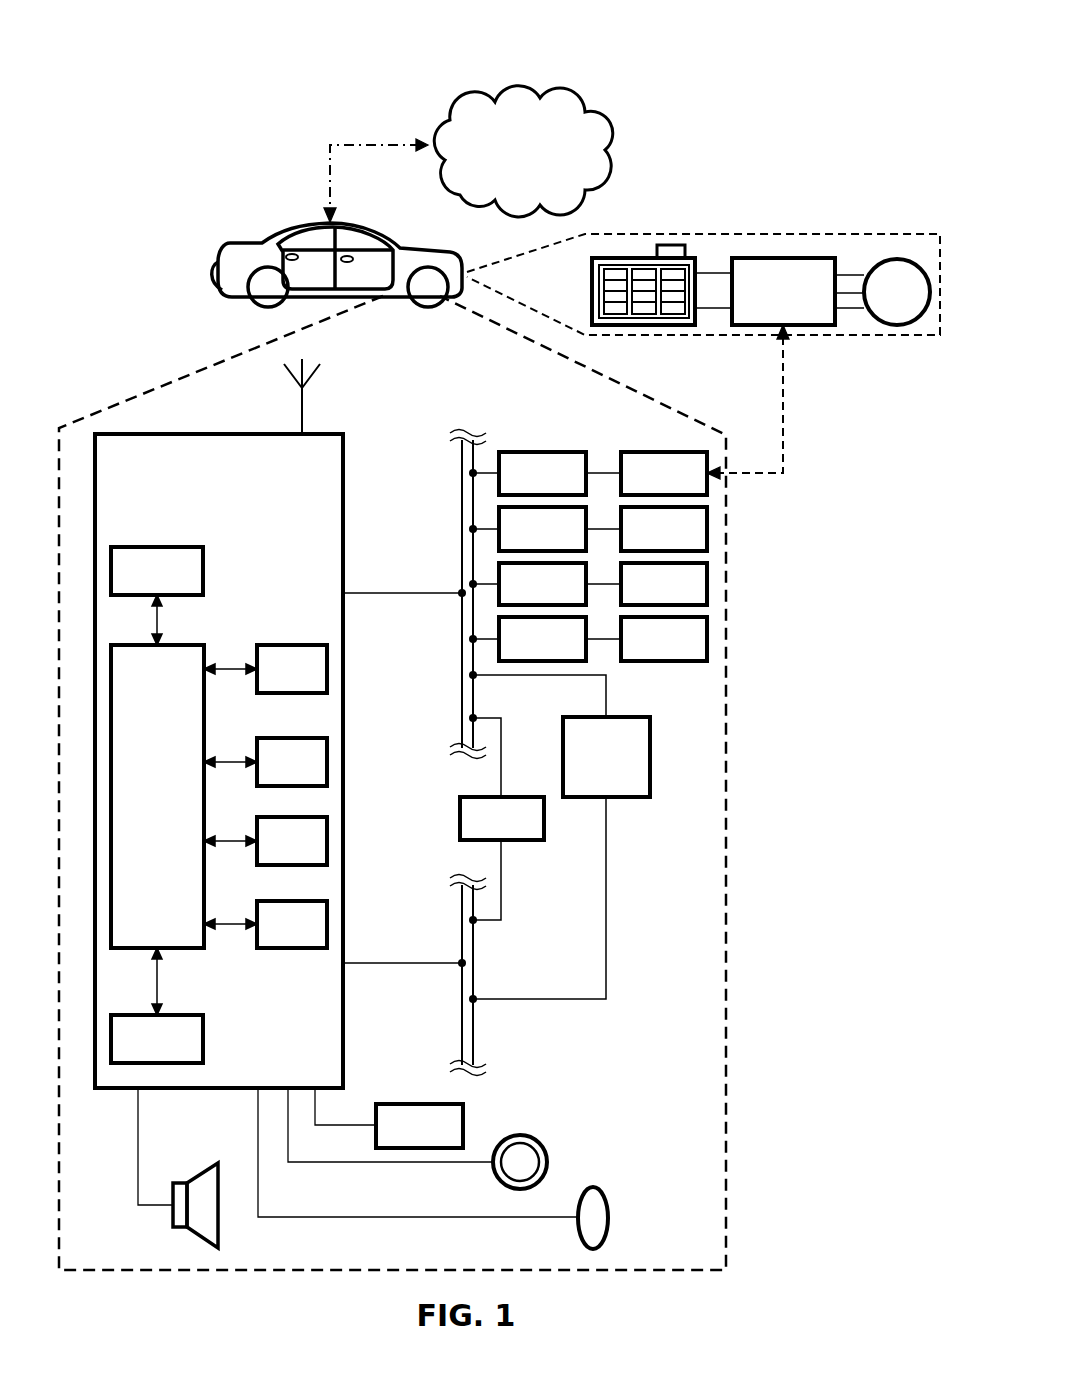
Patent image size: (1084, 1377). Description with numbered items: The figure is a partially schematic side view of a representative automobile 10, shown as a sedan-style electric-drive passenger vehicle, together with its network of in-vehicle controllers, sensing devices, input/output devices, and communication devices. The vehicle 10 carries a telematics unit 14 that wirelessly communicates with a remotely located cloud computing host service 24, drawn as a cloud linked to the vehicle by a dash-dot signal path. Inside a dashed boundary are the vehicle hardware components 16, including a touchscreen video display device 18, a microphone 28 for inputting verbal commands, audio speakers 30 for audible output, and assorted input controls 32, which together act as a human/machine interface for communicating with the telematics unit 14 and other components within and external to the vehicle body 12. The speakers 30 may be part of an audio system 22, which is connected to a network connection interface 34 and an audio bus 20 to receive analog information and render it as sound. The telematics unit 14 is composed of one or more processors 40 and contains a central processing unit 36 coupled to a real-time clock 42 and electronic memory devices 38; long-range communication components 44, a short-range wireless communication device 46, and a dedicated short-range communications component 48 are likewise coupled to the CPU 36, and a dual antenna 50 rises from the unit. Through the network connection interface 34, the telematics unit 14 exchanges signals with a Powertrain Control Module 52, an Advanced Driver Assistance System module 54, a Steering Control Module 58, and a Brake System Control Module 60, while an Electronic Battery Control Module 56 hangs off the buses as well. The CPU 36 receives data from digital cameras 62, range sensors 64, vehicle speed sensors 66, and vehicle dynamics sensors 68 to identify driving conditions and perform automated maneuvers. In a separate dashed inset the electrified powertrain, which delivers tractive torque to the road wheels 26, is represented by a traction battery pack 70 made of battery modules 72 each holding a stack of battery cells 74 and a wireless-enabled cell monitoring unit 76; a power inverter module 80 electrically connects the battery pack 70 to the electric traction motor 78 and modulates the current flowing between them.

The automobile 10 is at (200, 58).
The vehicle body 12 is at (317, 258).
The telematics unit 14 is at (343, 640).
The vehicle hardware components 16 is at (207, 366).
The touchscreen video display device 18 is at (389, 1118).
The audio bus 20 is at (462, 1005).
The audio system 22 is at (606, 757).
The cloud computing host service 24 is at (523, 151).
The road wheels 26 is at (259, 292).
The microphone 28 is at (608, 1200).
The audio speakers 30 is at (200, 1240).
The input controls 32 is at (548, 1158).
The network connection interface 34 is at (462, 665).
The central processing unit 36 is at (157, 796).
The electronic memory devices 38 is at (157, 1039).
The processors 40 is at (157, 571).
The real-time clock 42 is at (292, 669).
The long-range communication components 44 is at (292, 762).
The short-range wireless communication device 46 is at (292, 841).
The dedicated short-range communications component 48 is at (292, 924).
The dual antenna 50 is at (304, 424).
The Powertrain Control Module 52 is at (542, 473).
The Advanced Driver Assistance System module 54 is at (664, 473).
The Electronic Battery Control Module 56 is at (502, 818).
The Steering Control Module 58 is at (542, 529).
The Brake System Control Module 60 is at (664, 529).
The digital cameras 62 is at (542, 584).
The range sensors 64 is at (664, 584).
The vehicle speed sensors 66 is at (542, 639).
The vehicle dynamics sensors 68 is at (664, 639).
The traction battery pack 70 is at (703, 276).
The battery modules 72 is at (615, 247).
The battery cells 74 is at (596, 278).
The cell monitoring unit 76 is at (670, 245).
The electric traction motor 78 is at (880, 260).
The power inverter module 80 is at (746, 258).